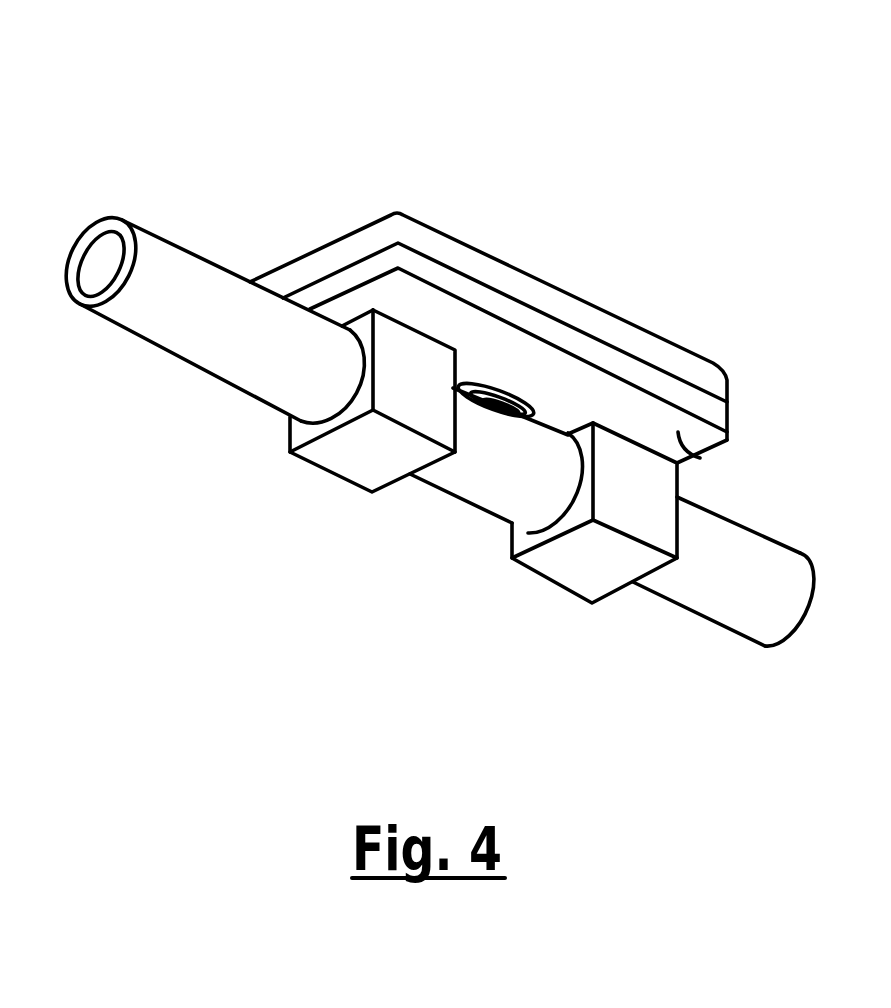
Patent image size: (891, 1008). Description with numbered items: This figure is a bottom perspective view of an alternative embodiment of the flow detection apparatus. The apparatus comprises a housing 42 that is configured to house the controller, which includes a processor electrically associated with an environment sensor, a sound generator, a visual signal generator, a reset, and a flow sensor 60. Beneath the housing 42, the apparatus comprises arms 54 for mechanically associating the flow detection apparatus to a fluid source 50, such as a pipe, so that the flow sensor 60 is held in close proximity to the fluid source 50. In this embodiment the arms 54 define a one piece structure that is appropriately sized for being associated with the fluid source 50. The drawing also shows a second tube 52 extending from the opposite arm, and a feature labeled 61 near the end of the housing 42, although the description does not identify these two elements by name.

The housing 42 is at (477, 249).
The fluid source 50 is at (176, 249).
The second tube 52 is at (705, 593).
The arms 54 is at (354, 460).
The flow sensor 60 is at (520, 398).
The plate edge 61 is at (697, 463).